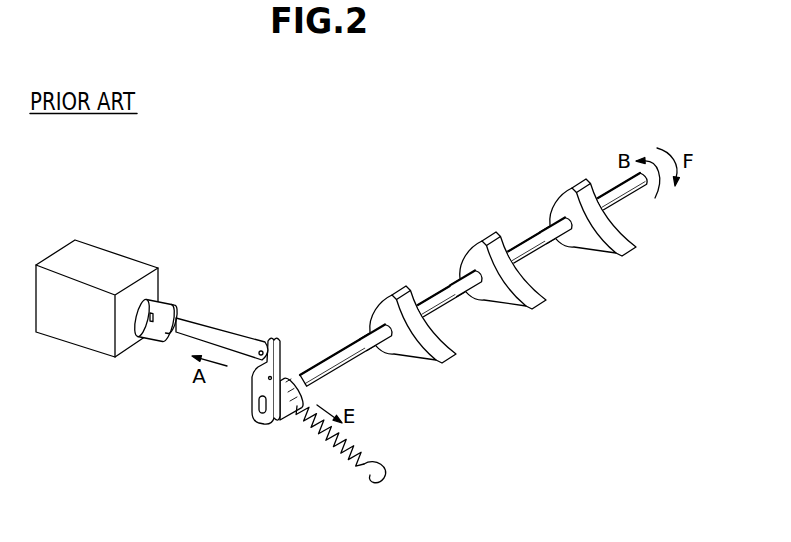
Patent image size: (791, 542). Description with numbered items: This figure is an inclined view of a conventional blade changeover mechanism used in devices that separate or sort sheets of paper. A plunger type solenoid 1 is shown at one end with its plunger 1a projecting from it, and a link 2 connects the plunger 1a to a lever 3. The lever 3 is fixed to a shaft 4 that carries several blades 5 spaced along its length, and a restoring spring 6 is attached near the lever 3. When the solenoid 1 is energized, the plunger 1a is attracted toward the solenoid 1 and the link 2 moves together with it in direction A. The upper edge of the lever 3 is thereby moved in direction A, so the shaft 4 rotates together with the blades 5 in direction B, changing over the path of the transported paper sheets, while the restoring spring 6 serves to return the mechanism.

The plunger type solenoid 1 is at (125, 266).
The plunger 1a is at (157, 341).
The link 2 is at (228, 343).
The lever 3 is at (258, 385).
The shaft 4 is at (330, 362).
The blades 5 is at (390, 302).
The restoring spring 6 is at (348, 466).